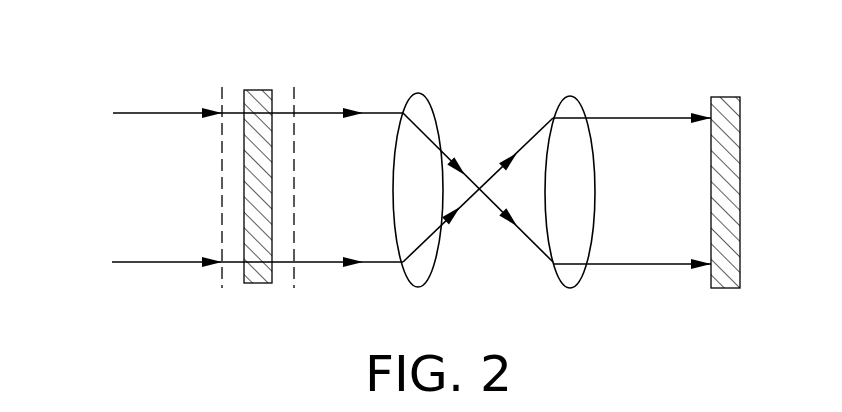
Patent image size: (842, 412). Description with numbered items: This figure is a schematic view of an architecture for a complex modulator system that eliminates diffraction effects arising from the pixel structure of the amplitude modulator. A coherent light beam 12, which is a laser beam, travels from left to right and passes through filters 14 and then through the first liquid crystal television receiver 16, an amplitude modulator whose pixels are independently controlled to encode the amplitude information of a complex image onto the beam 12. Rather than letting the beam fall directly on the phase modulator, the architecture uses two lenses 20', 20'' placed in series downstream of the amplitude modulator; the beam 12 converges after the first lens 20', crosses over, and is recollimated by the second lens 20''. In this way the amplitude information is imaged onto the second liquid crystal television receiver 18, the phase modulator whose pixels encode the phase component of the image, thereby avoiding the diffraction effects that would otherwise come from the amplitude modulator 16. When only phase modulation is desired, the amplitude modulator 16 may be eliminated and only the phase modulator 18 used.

The coherent light beam 12 is at (166, 263).
The filters 14 is at (294, 90).
The first liquid crystal television receiver 16 is at (262, 283).
The second liquid crystal television receiver 18 is at (740, 272).
The lens 20' is at (425, 211).
The lens 20'' is at (577, 212).